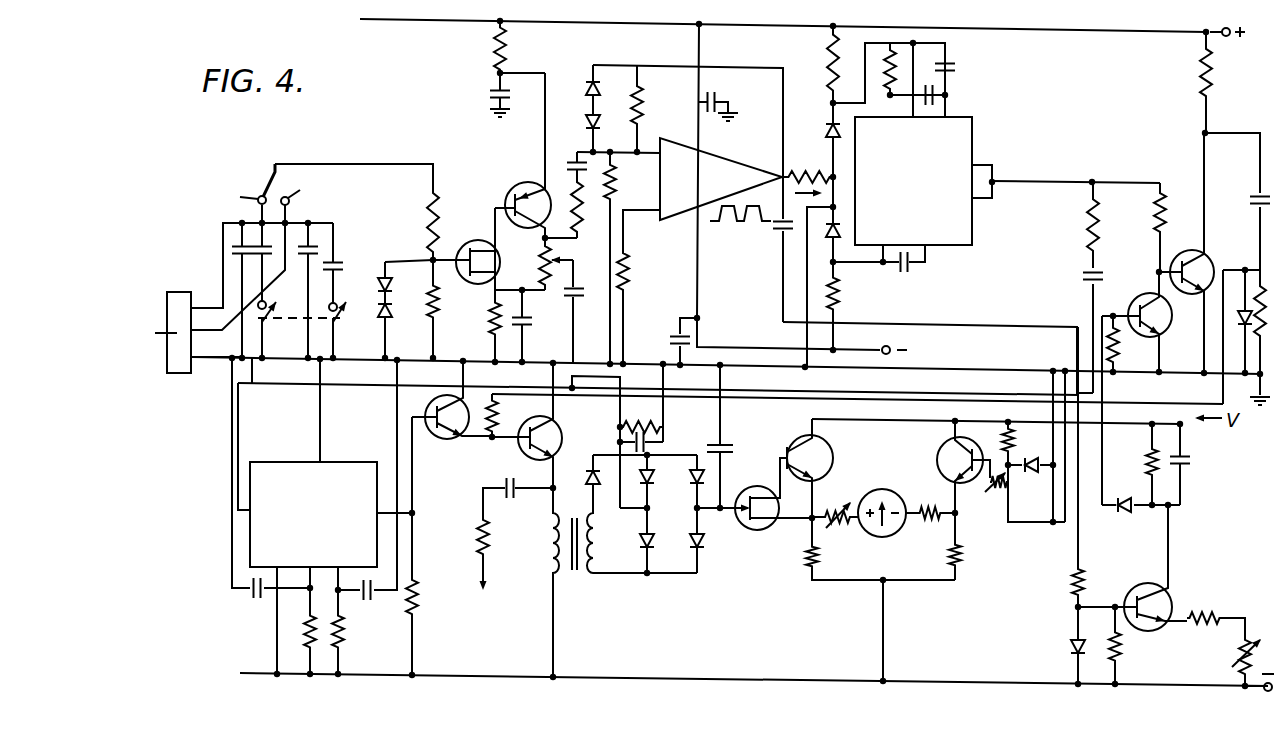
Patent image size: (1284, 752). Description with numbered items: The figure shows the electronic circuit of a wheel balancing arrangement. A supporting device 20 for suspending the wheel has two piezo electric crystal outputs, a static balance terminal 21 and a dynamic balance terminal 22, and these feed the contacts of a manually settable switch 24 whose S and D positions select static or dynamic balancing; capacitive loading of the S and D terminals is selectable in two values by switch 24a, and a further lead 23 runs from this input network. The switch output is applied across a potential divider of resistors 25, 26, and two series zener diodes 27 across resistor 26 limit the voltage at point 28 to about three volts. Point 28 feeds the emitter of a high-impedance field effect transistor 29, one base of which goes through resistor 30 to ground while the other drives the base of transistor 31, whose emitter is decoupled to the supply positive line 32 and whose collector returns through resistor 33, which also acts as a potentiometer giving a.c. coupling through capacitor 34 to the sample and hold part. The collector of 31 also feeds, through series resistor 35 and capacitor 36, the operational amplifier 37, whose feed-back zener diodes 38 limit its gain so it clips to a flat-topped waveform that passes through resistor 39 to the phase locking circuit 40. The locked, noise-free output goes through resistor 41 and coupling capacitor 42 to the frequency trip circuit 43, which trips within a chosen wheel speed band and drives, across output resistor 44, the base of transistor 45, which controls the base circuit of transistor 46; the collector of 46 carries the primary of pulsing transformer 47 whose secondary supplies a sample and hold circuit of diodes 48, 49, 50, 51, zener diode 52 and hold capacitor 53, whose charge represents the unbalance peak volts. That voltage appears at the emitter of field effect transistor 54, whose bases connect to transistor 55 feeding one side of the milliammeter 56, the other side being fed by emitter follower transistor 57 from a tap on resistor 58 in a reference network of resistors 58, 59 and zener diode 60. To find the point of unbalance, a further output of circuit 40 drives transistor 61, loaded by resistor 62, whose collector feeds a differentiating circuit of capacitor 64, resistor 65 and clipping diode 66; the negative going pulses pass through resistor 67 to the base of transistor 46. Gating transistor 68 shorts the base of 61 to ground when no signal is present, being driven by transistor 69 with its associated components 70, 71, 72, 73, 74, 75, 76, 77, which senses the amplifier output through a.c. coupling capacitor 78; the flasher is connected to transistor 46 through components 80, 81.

The supporting device 20 is at (177, 300).
The static balance crystal output terminal 21 is at (222, 235).
The dynamic balance crystal output terminal 22 is at (207, 360).
The lead 23 is at (254, 433).
The switch 24 is at (268, 181).
The switch 24a is at (317, 330).
The resistor 25 is at (428, 208).
The resistor 26 is at (441, 308).
The zener diodes 27 is at (374, 287).
The point of the potential divider 28 is at (425, 257).
The field effect transistor 29 is at (494, 270).
The resistor 30 is at (485, 338).
The transistor 31 is at (510, 186).
The main circuit supply positive line 32 is at (556, 22).
The resistor 33 is at (548, 298).
The coupling capacitor 34 is at (564, 296).
The series resistor 35 is at (571, 226).
The capacitor 36 is at (578, 156).
The operational amplifier 37 is at (671, 144).
The zener diodes 38 is at (583, 106).
The series resistor 39 is at (808, 172).
The phase locking circuit 40 is at (937, 263).
The series resistor 41 is at (1100, 230).
The coupling capacitor 42 is at (1104, 274).
The frequency trip circuit 43 is at (343, 460).
The output resistor 44 is at (424, 556).
The transistor 45 is at (444, 440).
The transistor 46 is at (563, 431).
The pulsing transformer 47 is at (575, 568).
The diode 48 is at (652, 479).
The diode 49 is at (695, 456).
The diode 50 is at (641, 543).
The diode 51 is at (703, 542).
The zener diode 52 is at (586, 470).
The hold capacitor 53 is at (727, 445).
The field effect transistor 54 is at (750, 487).
The transistor 55 is at (797, 439).
The milliammeter 56 is at (884, 489).
The emitter follower transistor 57 is at (941, 449).
The resistor 58 is at (1004, 493).
The resistor 59 is at (1011, 440).
The zener diode 60 is at (1037, 474).
The transistor 61 is at (1190, 252).
The resistor 62 is at (1199, 66).
The capacitor 64 is at (1255, 196).
The resistor 65 is at (1246, 336).
The clipping diode 66 is at (1243, 300).
The resistor 67 is at (492, 407).
The gating transistor 68 is at (1160, 331).
The transistor 69 is at (1140, 584).
The associated component 70 is at (1076, 576).
The associated component 71 is at (1064, 650).
The associated component 72 is at (1119, 647).
The associated component 73 is at (1203, 623).
The associated component 74 is at (1234, 665).
The associated component 75 is at (1149, 460).
The associated component 76 is at (1196, 462).
The associated component 77 is at (1122, 512).
The a.c. coupling capacitor 78 is at (772, 228).
The flasher coupling component 80 is at (502, 480).
The flasher coupling component 81 is at (504, 517).